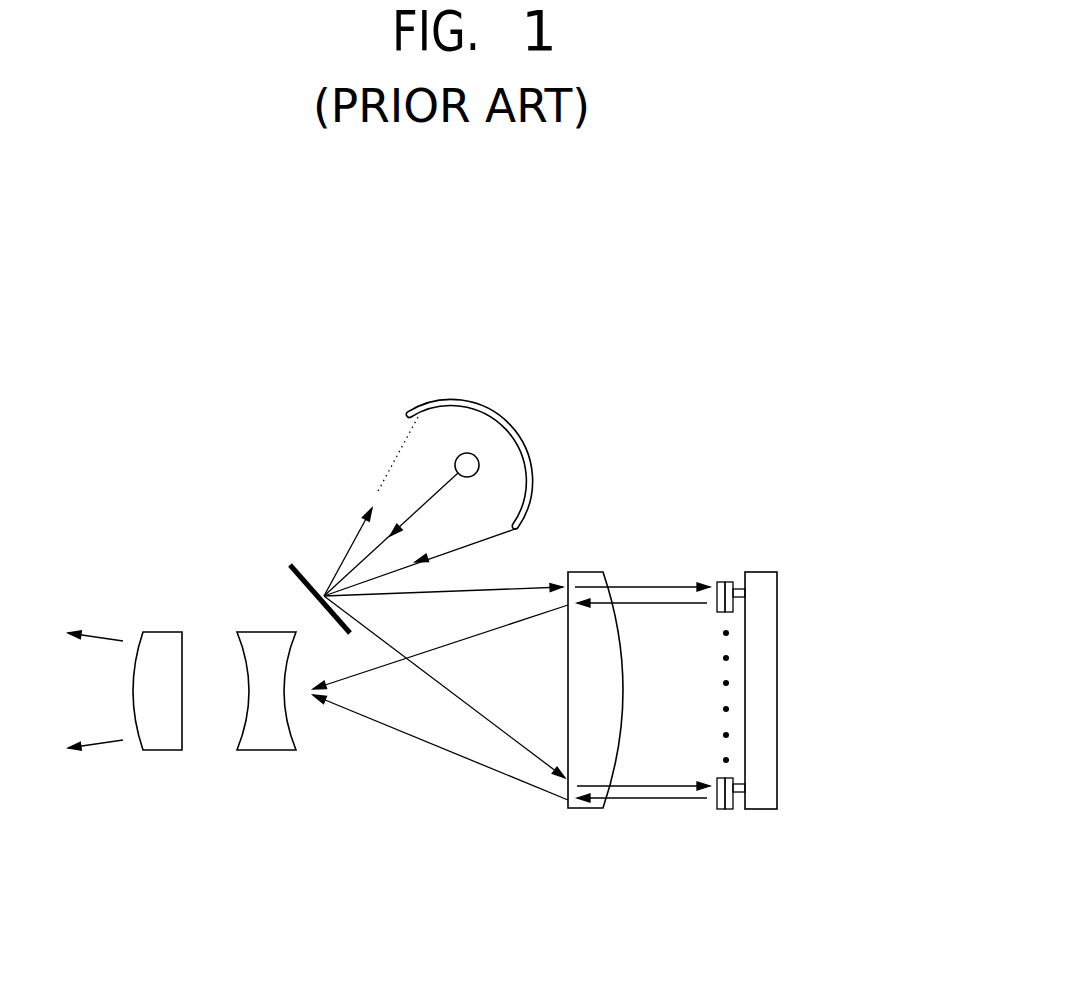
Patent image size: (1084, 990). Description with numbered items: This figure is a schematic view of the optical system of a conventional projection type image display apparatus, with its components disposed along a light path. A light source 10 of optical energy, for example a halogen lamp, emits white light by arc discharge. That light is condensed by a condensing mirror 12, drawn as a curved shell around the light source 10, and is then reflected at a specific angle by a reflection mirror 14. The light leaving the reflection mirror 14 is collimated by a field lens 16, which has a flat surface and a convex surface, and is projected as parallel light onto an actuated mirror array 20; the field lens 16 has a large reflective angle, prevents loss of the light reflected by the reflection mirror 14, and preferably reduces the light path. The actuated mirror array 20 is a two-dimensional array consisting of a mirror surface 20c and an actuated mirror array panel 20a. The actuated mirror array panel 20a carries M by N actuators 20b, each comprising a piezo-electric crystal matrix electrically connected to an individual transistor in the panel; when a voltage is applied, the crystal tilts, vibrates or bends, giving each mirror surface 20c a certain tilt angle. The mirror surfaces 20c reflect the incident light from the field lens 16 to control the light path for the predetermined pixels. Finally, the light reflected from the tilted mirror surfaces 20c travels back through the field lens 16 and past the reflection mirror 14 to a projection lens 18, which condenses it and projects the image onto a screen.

The light source 10 is at (468, 462).
The condensing mirror 12 is at (510, 427).
The reflection mirror 14 is at (300, 587).
The field lens 16 is at (585, 580).
The projection lens 18 is at (163, 750).
The actuated mirror array 20 is at (761, 697).
The actuated mirror array panel 20a is at (767, 748).
The actuators 20b is at (728, 810).
The mirror surface 20c is at (720, 802).